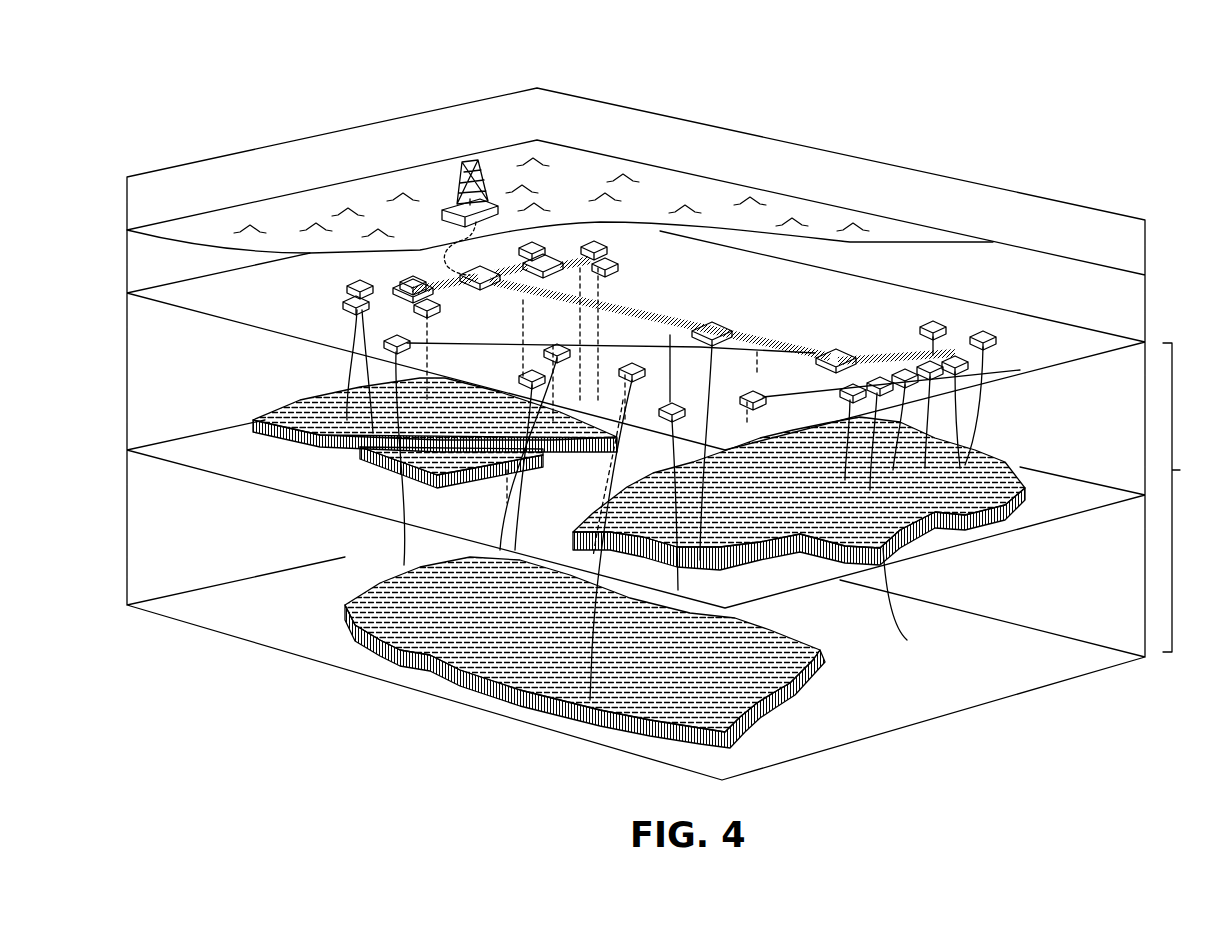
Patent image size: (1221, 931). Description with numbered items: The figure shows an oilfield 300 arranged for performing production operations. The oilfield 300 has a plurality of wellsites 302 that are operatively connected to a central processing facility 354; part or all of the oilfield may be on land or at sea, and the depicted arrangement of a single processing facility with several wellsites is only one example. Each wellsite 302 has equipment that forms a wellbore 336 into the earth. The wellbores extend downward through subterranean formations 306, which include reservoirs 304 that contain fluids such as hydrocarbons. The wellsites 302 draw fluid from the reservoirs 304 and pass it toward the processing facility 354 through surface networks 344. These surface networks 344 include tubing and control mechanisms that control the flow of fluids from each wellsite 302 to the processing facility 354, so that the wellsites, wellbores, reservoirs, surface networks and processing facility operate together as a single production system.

The oilfield 300 is at (166, 96).
The central processing facility 354 is at (452, 170).
The surface networks 344 is at (392, 300).
The wellsites 302 is at (757, 381).
The wellbore 336 is at (965, 447).
The reservoirs 304 is at (825, 660).
The subterranean formations 306 is at (1192, 497).